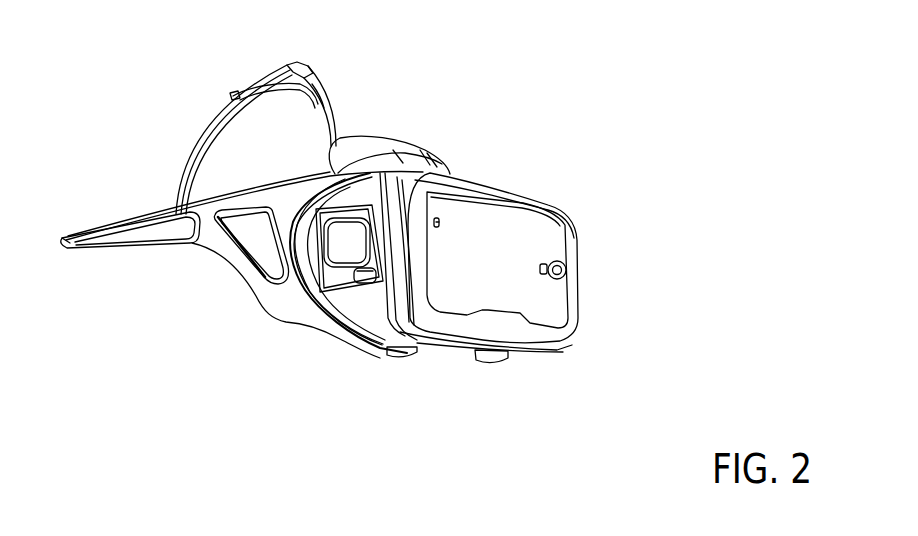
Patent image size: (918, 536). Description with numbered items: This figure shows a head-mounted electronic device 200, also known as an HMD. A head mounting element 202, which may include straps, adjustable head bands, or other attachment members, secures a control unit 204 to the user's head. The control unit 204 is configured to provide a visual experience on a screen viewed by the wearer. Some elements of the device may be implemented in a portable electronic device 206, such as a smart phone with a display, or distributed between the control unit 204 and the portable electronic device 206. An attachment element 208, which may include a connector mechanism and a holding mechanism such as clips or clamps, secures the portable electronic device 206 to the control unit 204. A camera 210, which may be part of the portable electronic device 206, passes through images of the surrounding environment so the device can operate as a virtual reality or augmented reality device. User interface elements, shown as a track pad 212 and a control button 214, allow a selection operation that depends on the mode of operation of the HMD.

The head-mounted electronic device 200 is at (658, 88).
The head mounting element 202 is at (170, 238).
The control unit 204 is at (377, 310).
The portable electronic device 206 is at (530, 230).
The attachment element 208 is at (470, 182).
The camera 210 is at (565, 265).
The track pad 212 is at (337, 240).
The control button 214 is at (357, 284).